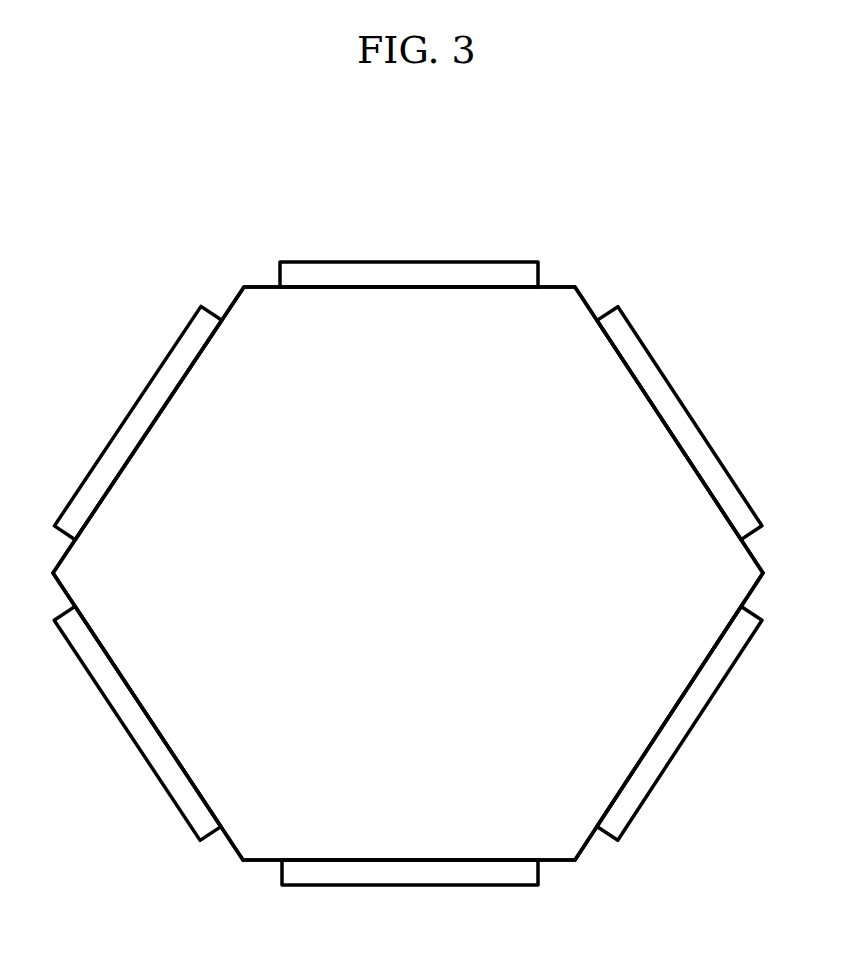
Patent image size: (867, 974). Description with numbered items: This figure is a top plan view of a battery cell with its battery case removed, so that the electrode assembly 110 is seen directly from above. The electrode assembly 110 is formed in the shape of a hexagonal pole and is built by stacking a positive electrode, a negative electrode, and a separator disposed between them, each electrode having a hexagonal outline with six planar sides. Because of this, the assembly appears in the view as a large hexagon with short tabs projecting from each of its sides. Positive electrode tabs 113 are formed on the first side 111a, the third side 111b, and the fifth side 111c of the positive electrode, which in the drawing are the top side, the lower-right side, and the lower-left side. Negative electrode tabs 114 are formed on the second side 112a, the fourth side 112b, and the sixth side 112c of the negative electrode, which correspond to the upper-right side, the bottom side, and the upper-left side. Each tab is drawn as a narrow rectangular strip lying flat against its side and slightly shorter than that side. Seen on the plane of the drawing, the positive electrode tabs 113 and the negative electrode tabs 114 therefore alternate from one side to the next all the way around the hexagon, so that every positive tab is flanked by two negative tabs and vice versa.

The electrode assembly 110 is at (237, 282).
The first side 111a is at (403, 307).
The third side 111b is at (667, 693).
The fifth side 111c is at (155, 710).
The second side 112a is at (657, 448).
The fourth side 112b is at (433, 852).
The sixth side 112c is at (160, 445).
The positive electrode tabs 113 is at (403, 270).
The negative electrode tabs 114 is at (140, 422).